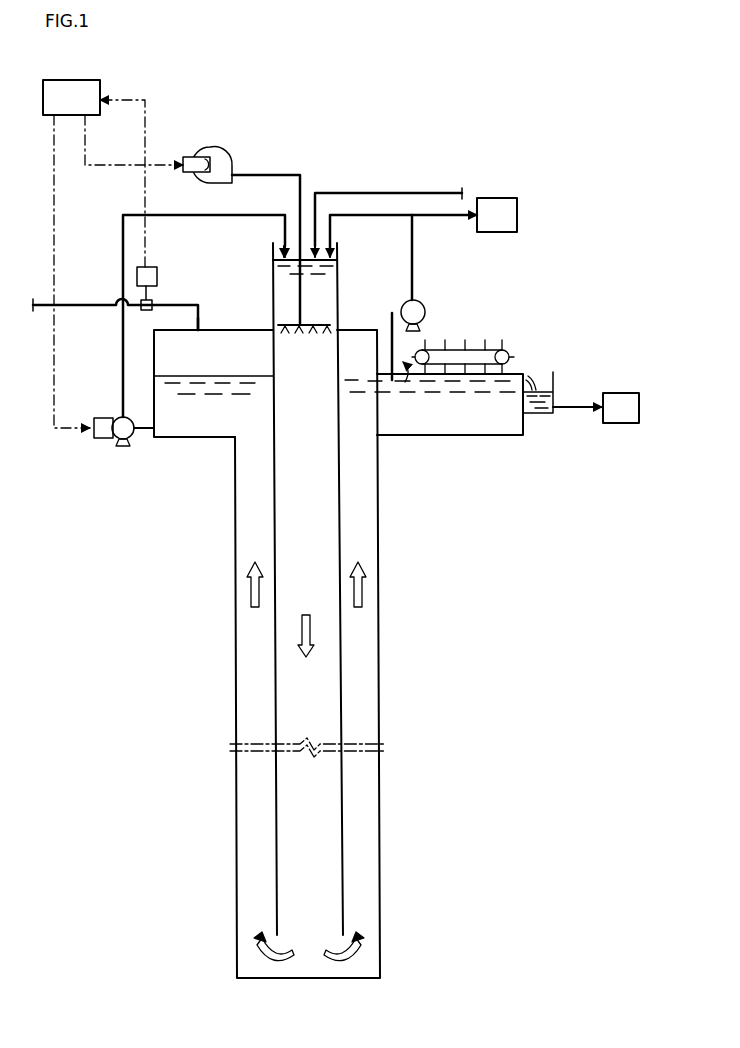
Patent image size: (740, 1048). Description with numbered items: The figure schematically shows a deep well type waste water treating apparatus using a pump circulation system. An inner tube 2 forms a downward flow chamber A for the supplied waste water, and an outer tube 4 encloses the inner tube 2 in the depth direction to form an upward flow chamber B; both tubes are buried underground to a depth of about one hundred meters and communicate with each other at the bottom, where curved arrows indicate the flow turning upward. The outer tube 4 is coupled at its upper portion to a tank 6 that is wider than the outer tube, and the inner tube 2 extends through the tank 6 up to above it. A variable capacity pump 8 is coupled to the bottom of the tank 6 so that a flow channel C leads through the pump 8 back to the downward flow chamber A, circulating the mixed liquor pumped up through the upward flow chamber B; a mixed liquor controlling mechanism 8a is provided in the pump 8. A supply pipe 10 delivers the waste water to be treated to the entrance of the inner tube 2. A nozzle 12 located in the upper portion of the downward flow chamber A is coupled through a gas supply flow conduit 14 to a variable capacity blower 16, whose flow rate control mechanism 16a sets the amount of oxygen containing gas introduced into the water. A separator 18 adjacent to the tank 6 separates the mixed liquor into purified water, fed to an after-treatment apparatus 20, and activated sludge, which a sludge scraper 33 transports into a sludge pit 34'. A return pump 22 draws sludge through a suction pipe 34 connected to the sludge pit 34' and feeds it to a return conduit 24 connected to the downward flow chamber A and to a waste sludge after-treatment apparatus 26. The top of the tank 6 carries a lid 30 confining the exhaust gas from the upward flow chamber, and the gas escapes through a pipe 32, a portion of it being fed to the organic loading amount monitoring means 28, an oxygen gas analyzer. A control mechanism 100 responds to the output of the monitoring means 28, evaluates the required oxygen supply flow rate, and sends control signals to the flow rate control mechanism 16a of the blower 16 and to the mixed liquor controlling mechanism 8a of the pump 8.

The control mechanism 100 is at (100, 85).
The flow rate control mechanism 16a is at (190, 157).
The variable capacity blower 16 is at (225, 150).
The gas supply flow conduit 14 is at (278, 176).
The supply pipe 10 is at (380, 190).
The waste sludge after-treatment apparatus 26 is at (517, 213).
The return conduit 24 is at (375, 218).
The flow channel C is at (213, 219).
The organic loading amount monitoring means 28 is at (137, 272).
The pipe 32 is at (187, 303).
The lid 30 is at (212, 329).
The nozzle 12 is at (284, 322).
The return pump 22 is at (426, 308).
The suction pipe 34 is at (433, 346).
The sludge scraper 33 is at (508, 345).
The tank 6 is at (150, 368).
The sludge pit 34' is at (410, 388).
The after-treatment apparatus 20 is at (620, 423).
The mixed liquor controlling mechanism 8a is at (103, 440).
The pump 8 is at (128, 440).
The separator 18 is at (458, 437).
The upward flow chamber B is at (249, 589).
The downward flow chamber A is at (313, 633).
The outer tube 4 is at (378, 672).
The inner tube 2 is at (343, 818).